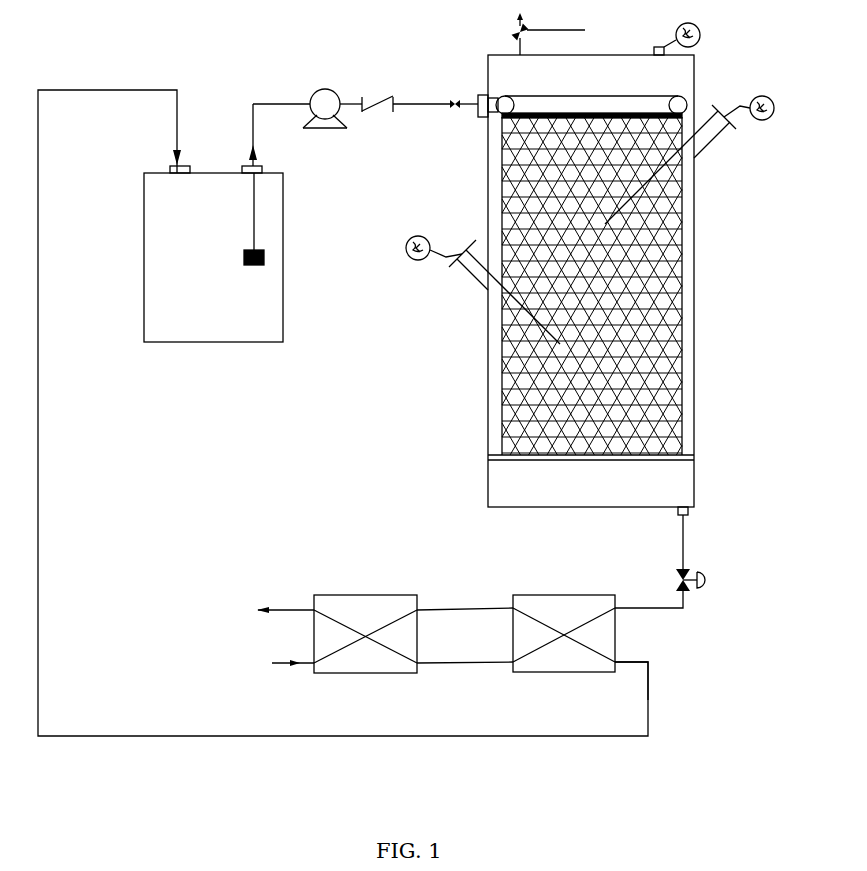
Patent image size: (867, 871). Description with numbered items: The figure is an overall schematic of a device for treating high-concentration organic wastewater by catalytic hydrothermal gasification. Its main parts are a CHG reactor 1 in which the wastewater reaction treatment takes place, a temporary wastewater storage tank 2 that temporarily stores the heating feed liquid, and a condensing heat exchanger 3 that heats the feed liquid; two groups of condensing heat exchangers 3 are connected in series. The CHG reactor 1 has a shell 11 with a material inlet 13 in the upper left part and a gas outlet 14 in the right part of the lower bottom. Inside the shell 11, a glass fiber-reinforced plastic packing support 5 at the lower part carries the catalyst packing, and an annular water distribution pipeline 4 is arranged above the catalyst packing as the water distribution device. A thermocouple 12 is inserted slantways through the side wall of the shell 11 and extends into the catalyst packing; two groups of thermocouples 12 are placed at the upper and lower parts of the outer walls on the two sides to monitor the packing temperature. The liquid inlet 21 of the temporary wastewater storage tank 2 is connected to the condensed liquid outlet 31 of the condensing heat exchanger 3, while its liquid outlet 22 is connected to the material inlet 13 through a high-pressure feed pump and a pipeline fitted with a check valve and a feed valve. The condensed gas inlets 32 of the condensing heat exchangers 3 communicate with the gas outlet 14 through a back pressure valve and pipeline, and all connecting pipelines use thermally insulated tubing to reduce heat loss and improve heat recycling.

The CHG reactor 1 is at (627, 281).
The shell 11 is at (638, 284).
The thermocouple 12 is at (592, 220).
The material inlet 13 is at (447, 86).
The gas outlet 14 is at (722, 538).
The temporary wastewater storage tank 2 is at (207, 278).
The liquid inlet 21 is at (141, 152).
The liquid outlet 22 is at (293, 156).
The condensing heat exchanger 3 is at (436, 682).
The condensed liquid outlet 31 is at (674, 716).
The condensed gas inlet 32 is at (674, 634).
The annular water distribution pipeline 4 is at (587, 58).
The glass fiber-reinforced plastic packing support 5 is at (559, 472).